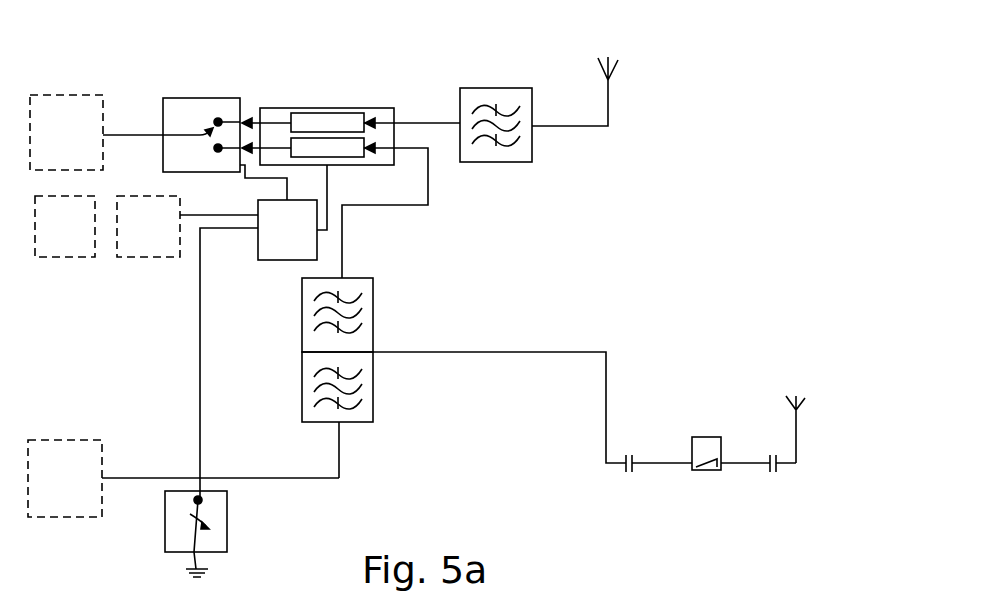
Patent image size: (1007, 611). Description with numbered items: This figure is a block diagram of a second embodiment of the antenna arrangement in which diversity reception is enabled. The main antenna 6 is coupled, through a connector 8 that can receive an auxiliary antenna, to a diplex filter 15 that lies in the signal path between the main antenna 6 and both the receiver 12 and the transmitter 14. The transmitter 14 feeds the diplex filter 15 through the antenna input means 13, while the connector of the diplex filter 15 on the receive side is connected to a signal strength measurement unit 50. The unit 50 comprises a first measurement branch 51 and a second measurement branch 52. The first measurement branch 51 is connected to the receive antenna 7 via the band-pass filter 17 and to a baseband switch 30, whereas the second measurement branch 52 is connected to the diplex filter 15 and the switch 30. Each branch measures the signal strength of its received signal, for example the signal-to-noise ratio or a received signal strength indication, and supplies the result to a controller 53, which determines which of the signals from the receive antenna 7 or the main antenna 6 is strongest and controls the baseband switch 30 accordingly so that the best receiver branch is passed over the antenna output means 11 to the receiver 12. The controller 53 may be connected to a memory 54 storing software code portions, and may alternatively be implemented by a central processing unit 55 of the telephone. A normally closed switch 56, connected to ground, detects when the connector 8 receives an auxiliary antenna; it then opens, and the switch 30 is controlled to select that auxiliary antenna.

The receiver 12 is at (80, 95).
The antenna output means 11 is at (150, 134).
The baseband switch 30 is at (197, 98).
The signal strength measurement unit 50 is at (352, 108).
The first measurement branch 51 is at (308, 113).
The second measurement branch 52 is at (350, 165).
The band-pass filter 17 is at (500, 88).
The receive antenna 7 is at (620, 62).
The central processing unit 55 is at (72, 257).
The memory 54 is at (150, 257).
The controller 53 is at (258, 262).
The diplex filter 15 is at (302, 352).
The antenna input means 13 is at (178, 478).
The transmitter 14 is at (85, 440).
The normally closed switch 56 is at (228, 506).
The connector 8 is at (713, 437).
The main antenna 6 is at (800, 406).